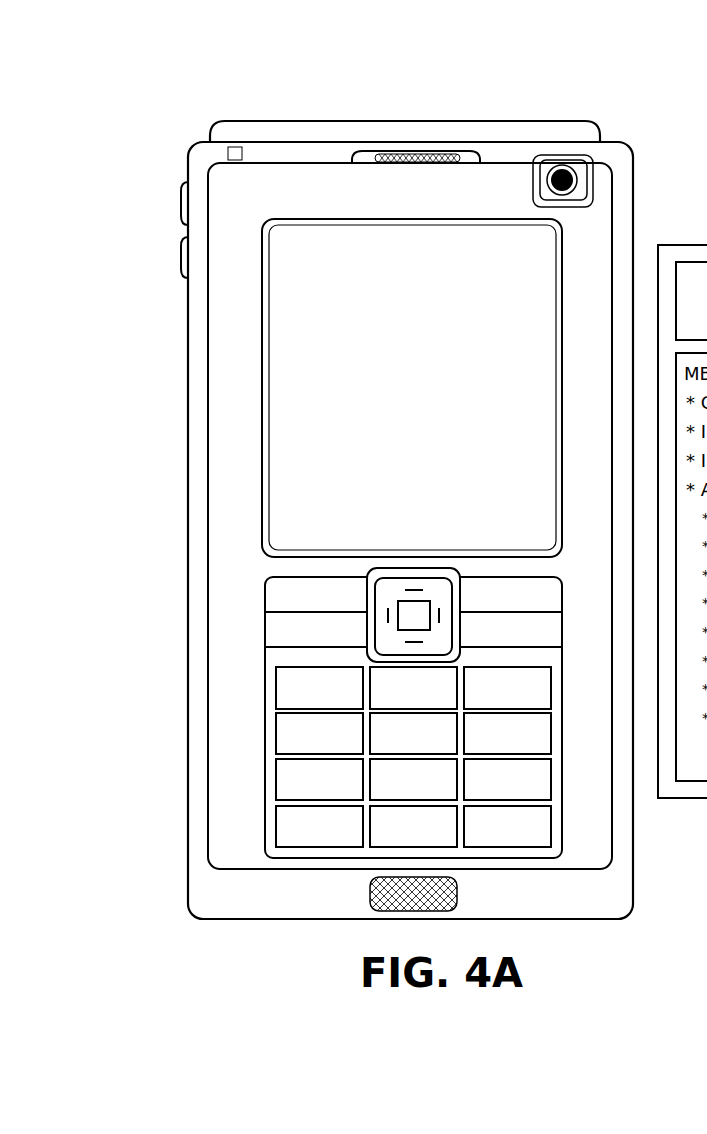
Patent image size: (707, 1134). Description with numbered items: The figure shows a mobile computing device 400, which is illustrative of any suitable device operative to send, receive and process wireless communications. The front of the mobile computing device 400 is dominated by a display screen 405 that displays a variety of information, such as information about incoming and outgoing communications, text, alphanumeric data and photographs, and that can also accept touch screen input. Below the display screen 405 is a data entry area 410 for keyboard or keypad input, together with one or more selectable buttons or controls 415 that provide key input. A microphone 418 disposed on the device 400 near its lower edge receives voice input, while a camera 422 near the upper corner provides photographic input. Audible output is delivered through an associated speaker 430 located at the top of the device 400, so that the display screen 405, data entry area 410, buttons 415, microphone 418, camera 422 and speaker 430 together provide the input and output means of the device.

The mobile computing device 400 is at (187, 147).
The display screen 405 is at (303, 368).
The data entry area 410 is at (265, 624).
The selectable buttons or controls 415 is at (290, 733).
The microphone 418 is at (370, 882).
The camera 422 is at (568, 174).
The speaker 430 is at (424, 157).